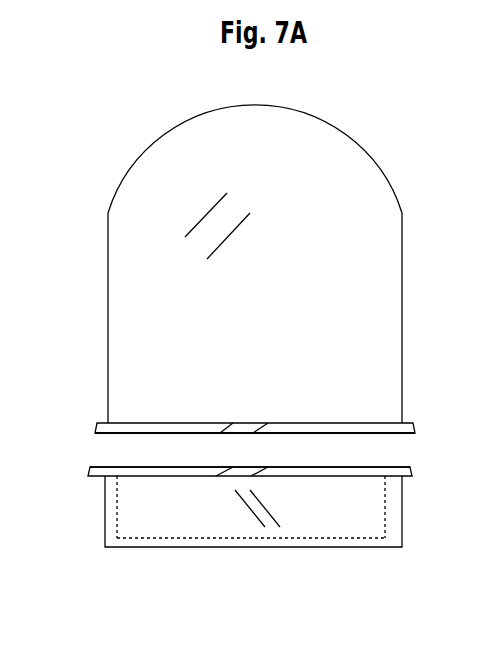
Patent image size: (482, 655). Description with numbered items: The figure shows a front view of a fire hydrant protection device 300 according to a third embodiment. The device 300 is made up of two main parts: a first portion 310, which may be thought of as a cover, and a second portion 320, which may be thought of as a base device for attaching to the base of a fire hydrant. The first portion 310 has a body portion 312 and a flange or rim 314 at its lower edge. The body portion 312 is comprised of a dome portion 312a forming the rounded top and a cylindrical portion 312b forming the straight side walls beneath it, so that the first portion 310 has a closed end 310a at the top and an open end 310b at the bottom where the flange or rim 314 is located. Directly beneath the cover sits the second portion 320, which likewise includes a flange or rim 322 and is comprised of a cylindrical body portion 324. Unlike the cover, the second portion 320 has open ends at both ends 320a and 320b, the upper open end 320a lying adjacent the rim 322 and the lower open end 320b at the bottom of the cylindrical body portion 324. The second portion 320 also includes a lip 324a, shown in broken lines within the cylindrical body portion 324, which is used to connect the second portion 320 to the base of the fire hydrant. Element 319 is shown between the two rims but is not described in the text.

The fire hydrant protection device 300 is at (375, 145).
The first portion 310 is at (255, 246).
The closed end 310a is at (247, 127).
The open end 310b is at (153, 430).
The body portion 312 is at (257, 209).
The dome portion 312a is at (155, 180).
The cylindrical portion 312b is at (157, 303).
The flange or rim 314 is at (403, 428).
The gasket 319 is at (297, 431).
The second portion 320 is at (246, 497).
The open end 320a is at (238, 467).
The open end 320b is at (232, 547).
The flange or rim 322 is at (110, 470).
The cylindrical body portion 324 is at (118, 513).
The lip 324a is at (152, 542).